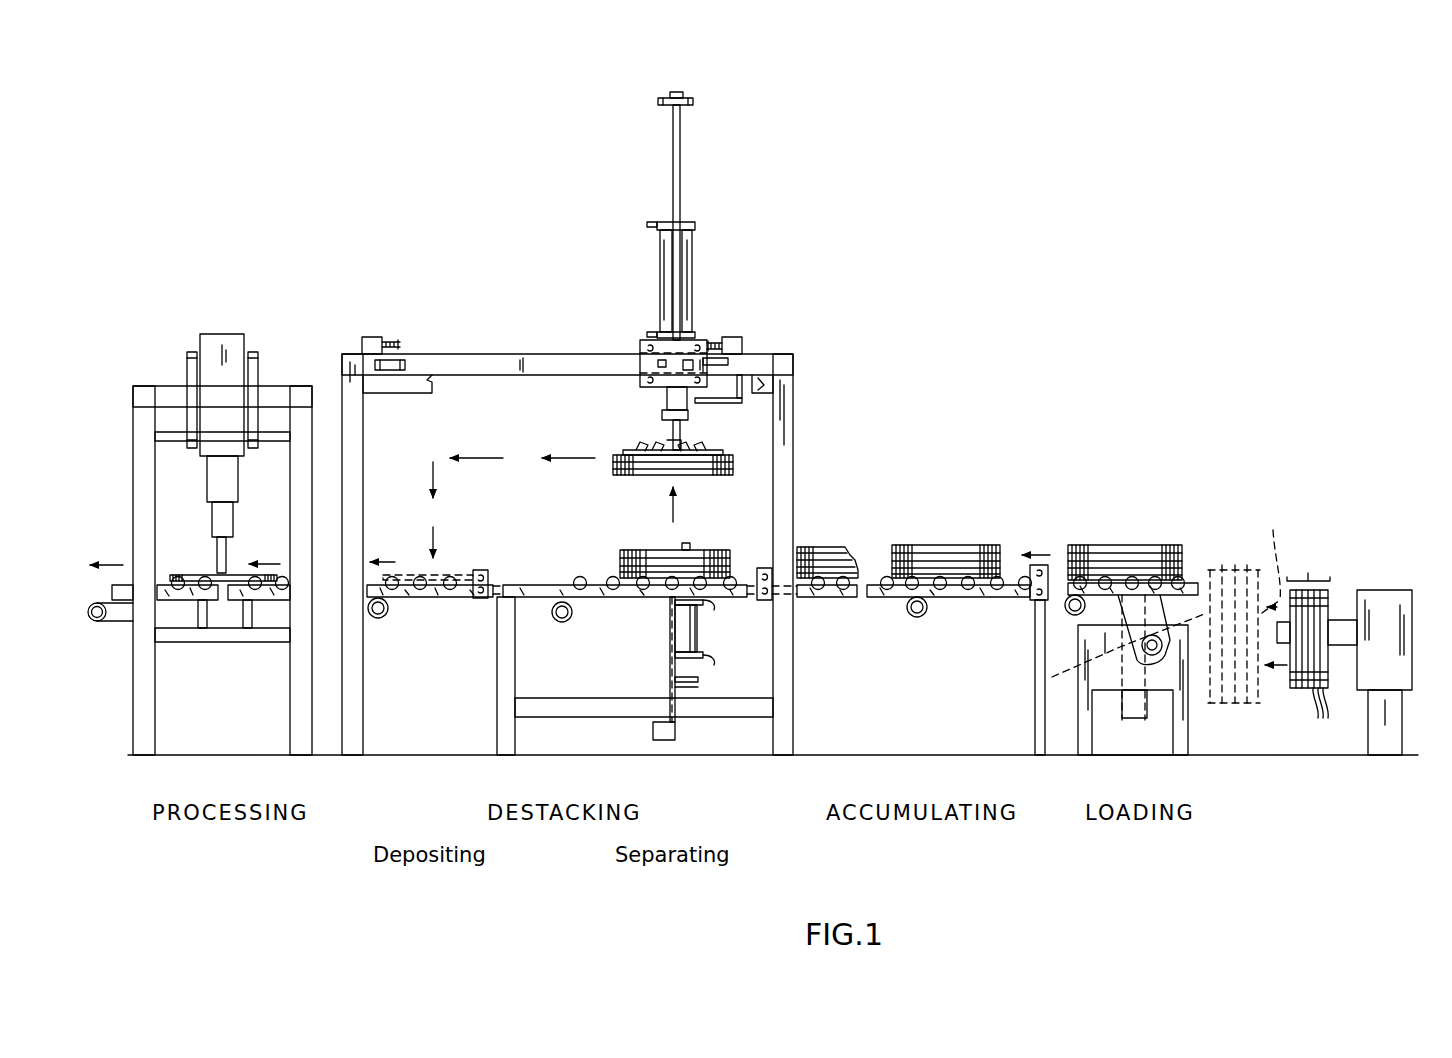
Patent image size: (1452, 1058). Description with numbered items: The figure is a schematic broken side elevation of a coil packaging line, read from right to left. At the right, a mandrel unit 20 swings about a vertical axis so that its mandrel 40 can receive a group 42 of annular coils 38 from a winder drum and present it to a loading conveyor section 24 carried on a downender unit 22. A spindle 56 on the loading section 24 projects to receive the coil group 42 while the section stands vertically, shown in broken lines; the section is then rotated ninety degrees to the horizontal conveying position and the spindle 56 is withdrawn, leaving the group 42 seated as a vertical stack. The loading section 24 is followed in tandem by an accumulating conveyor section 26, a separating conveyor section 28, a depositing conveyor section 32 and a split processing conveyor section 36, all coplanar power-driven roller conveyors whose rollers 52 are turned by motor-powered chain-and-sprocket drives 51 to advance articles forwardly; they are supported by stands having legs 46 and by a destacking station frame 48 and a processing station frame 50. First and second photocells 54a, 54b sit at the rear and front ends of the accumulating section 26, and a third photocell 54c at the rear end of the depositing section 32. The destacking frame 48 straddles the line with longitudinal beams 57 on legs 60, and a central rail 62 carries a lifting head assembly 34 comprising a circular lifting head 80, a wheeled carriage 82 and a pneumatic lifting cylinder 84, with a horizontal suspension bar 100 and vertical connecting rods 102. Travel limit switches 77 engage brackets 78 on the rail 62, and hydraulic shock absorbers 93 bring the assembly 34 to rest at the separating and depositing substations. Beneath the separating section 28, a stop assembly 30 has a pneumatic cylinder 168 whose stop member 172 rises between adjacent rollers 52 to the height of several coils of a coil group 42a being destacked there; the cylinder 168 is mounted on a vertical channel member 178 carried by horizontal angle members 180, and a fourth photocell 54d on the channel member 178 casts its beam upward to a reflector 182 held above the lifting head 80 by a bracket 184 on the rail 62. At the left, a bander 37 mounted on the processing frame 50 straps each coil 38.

The mandrel unit 20 is at (1390, 590).
The downender unit 22 is at (1192, 725).
The loading conveyor section 24 is at (1222, 557).
The accumulating conveyor section 26 is at (830, 597).
The separating conveyor section 28 is at (615, 600).
The stop assembly 30 is at (668, 633).
The depositing conveyor section 32 is at (428, 600).
The lifting head assembly 34 is at (712, 215).
The split processing conveyor section 36 is at (180, 600).
The bander 37 is at (232, 330).
The annular coils 38 is at (180, 575).
The mandrel 40 is at (1342, 620).
The coil group 42 is at (820, 547).
The stack being destacked 42a is at (700, 550).
The legs 46 is at (497, 738).
The destacking station frame 48 is at (796, 382).
The processing station frame 50 is at (133, 404).
The chain-and-sprocket drive 51 is at (88, 622).
The rollers 52 is at (313, 577).
The first photocell 54a is at (1030, 600).
The second photocell 54b is at (762, 600).
The third photocell 54c is at (480, 598).
The fourth photocell 54d is at (690, 690).
The spindle 56 is at (1052, 677).
The longitudinal beams 57 is at (400, 393).
The legs 60 is at (363, 697).
The rail 62 is at (455, 354).
The horizontal travel limit switches 77 is at (676, 383).
The brackets 78 is at (405, 363).
The circular lifting head 80 is at (612, 447).
The traversing carriage 82 is at (640, 345).
The pneumatic lifting cylinder 84 is at (692, 270).
The hydraulic shock absorbers 93 is at (372, 337).
The horizontal suspension bar 100 is at (658, 102).
The vertical connecting rods 102 is at (673, 163).
The pneumatic cylinder 168 is at (700, 632).
The stop member 172 is at (690, 585).
The channel member 178 is at (655, 730).
The horizontal angle members 180 is at (548, 710).
The reflector 182 is at (700, 410).
The bracket 184 is at (735, 358).